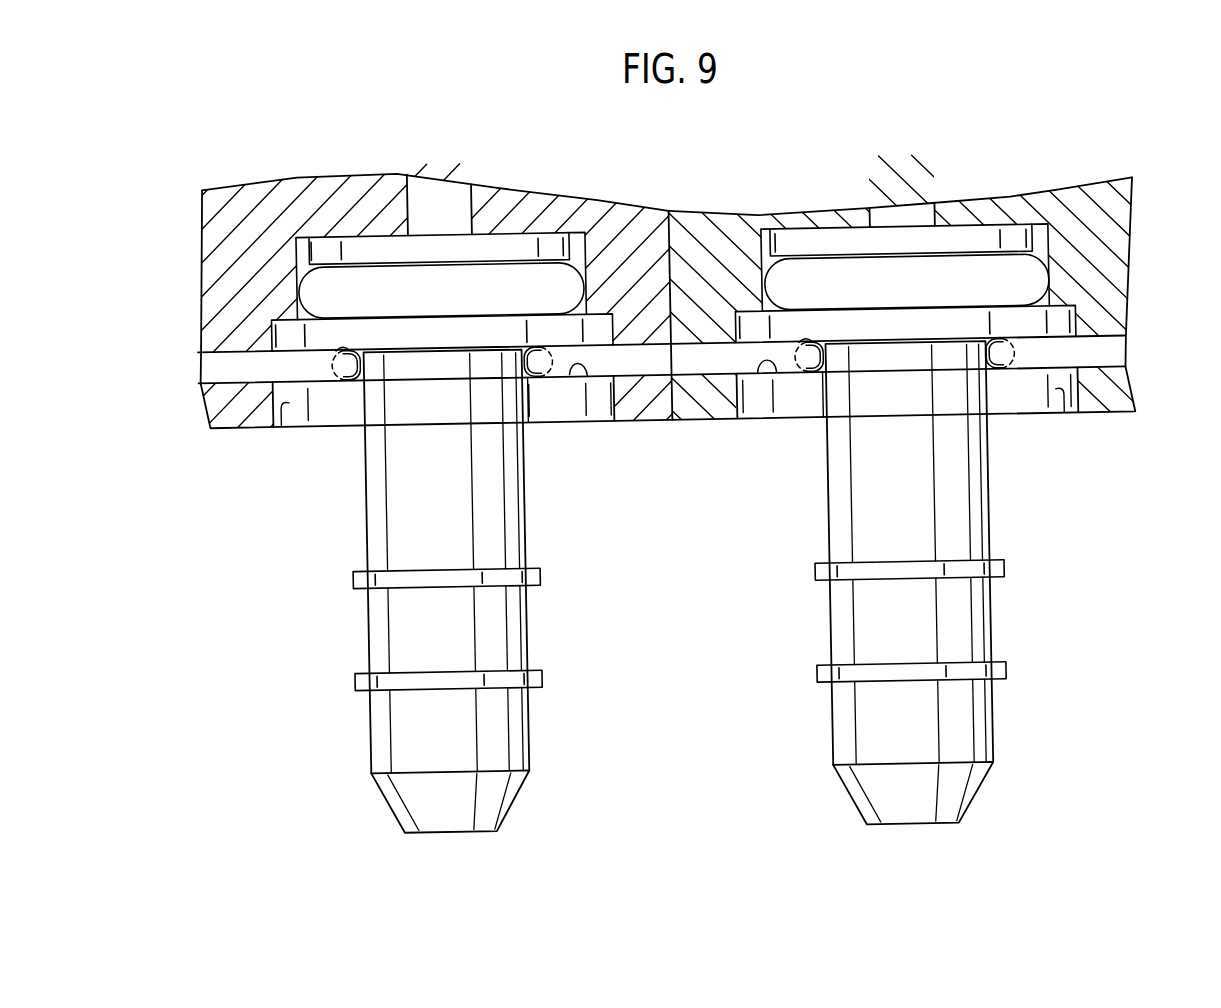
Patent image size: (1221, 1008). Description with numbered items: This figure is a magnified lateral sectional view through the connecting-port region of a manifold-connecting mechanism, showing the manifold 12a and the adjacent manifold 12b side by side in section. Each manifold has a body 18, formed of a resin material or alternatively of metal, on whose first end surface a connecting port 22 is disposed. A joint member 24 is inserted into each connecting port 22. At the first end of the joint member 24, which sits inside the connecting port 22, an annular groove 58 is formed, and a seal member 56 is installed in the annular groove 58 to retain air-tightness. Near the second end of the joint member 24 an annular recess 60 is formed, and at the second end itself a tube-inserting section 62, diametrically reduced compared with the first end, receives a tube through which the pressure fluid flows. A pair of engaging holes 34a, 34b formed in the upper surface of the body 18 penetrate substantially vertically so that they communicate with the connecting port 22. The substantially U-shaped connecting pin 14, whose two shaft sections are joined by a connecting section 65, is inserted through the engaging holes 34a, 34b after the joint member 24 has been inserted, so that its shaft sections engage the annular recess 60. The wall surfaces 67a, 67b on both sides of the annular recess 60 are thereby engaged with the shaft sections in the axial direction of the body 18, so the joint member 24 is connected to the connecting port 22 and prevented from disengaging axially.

The manifold 12a is at (1021, 196).
The adjacent manifold 12b is at (503, 182).
The connecting pin 14 is at (200, 360).
The body 18 is at (232, 240).
The connecting port 22 is at (287, 421).
The joint member 24 is at (524, 541).
The engaging hole 34a is at (533, 380).
The engaging hole 34b is at (359, 378).
The seal member 56 is at (313, 288).
The annular groove 58 is at (381, 262).
The annular recess 60 is at (276, 352).
The tube-inserting section 62 is at (482, 804).
The connecting section 65 is at (655, 362).
The wall surface 67a is at (587, 376).
The wall surface 67b is at (341, 343).